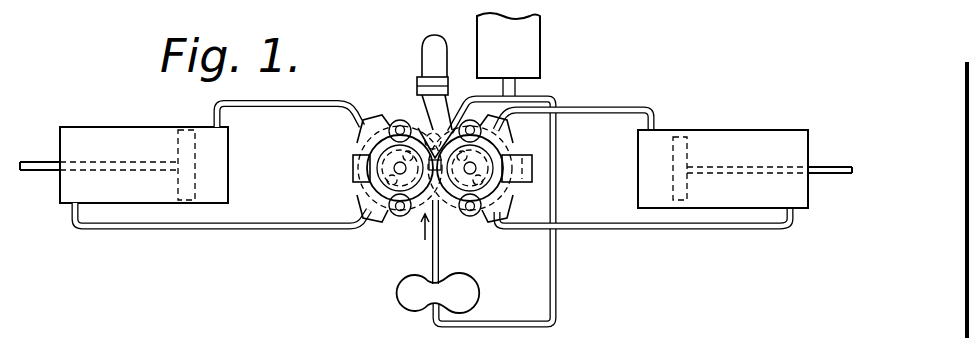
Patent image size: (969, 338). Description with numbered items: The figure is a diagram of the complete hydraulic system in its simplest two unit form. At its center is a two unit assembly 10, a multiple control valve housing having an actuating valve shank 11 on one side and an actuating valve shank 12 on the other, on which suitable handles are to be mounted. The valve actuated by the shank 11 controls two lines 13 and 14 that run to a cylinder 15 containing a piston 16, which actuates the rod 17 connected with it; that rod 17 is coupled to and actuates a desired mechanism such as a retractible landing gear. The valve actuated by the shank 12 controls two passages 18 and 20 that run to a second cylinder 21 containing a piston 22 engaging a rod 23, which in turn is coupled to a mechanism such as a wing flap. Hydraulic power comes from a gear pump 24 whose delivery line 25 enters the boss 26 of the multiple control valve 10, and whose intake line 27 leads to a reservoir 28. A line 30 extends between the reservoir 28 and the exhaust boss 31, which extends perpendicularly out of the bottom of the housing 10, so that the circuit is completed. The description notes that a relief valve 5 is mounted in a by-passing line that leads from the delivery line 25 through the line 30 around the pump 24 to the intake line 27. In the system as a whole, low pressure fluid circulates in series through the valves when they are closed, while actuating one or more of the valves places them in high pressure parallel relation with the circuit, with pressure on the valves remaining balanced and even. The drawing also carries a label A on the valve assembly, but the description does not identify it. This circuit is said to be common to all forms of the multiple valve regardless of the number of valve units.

The relief valve 5 is at (434, 107).
The two unit assembly 10 is at (422, 209).
The actuating valve shank 11 is at (393, 168).
The actuating valve shank 12 is at (473, 166).
The line 13 is at (357, 119).
The line 14 is at (343, 223).
The cylinder 15 is at (137, 126).
The piston 16 is at (197, 146).
The rod 17 is at (46, 161).
The passage 18 is at (612, 107).
The passage 20 is at (622, 231).
The cylinder 21 is at (740, 128).
The piston 22 is at (690, 177).
The rod 23 is at (829, 175).
The gear pump 24 is at (404, 298).
The delivery line 25 is at (439, 257).
The boss 26 is at (427, 205).
The intake line 27 is at (528, 303).
The reservoir 28 is at (541, 47).
The line 30 is at (473, 96).
The exhaust boss 31 is at (420, 124).
The valve A is at (366, 120).